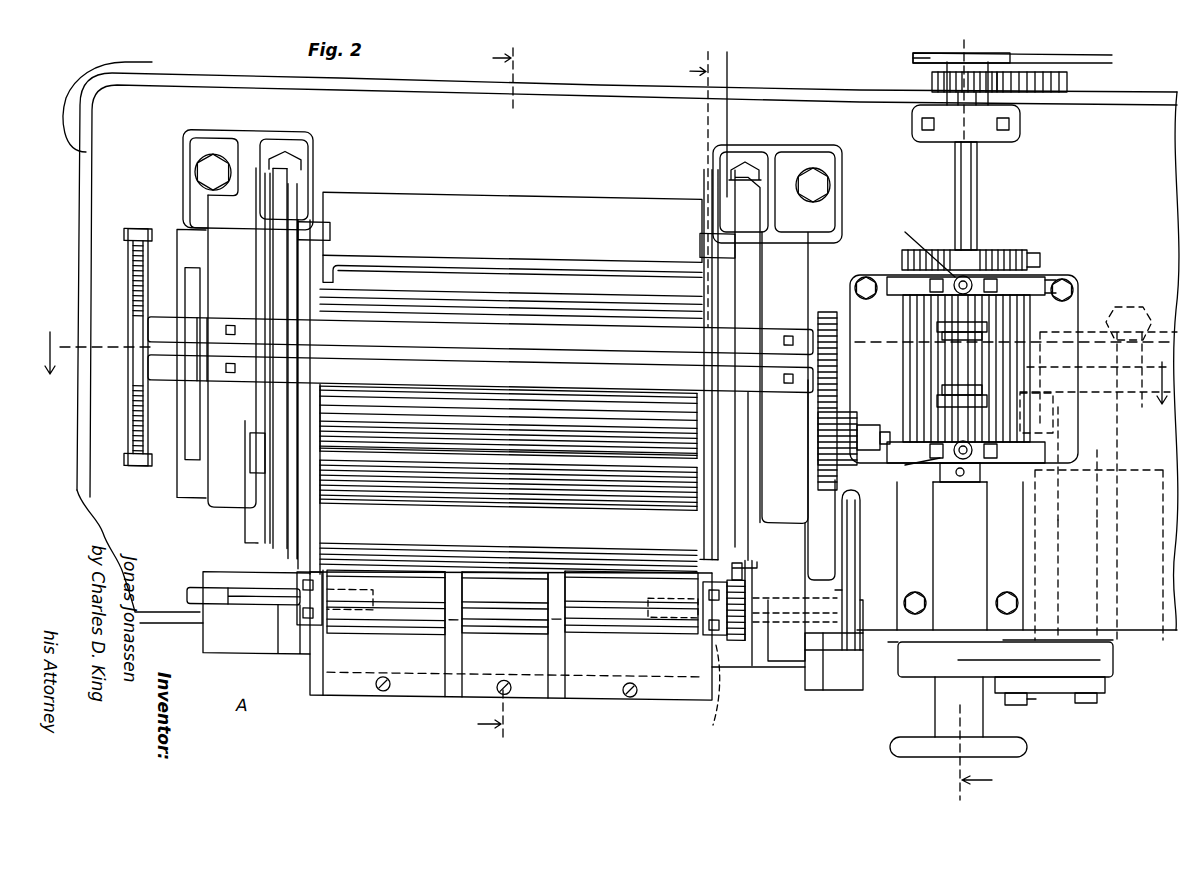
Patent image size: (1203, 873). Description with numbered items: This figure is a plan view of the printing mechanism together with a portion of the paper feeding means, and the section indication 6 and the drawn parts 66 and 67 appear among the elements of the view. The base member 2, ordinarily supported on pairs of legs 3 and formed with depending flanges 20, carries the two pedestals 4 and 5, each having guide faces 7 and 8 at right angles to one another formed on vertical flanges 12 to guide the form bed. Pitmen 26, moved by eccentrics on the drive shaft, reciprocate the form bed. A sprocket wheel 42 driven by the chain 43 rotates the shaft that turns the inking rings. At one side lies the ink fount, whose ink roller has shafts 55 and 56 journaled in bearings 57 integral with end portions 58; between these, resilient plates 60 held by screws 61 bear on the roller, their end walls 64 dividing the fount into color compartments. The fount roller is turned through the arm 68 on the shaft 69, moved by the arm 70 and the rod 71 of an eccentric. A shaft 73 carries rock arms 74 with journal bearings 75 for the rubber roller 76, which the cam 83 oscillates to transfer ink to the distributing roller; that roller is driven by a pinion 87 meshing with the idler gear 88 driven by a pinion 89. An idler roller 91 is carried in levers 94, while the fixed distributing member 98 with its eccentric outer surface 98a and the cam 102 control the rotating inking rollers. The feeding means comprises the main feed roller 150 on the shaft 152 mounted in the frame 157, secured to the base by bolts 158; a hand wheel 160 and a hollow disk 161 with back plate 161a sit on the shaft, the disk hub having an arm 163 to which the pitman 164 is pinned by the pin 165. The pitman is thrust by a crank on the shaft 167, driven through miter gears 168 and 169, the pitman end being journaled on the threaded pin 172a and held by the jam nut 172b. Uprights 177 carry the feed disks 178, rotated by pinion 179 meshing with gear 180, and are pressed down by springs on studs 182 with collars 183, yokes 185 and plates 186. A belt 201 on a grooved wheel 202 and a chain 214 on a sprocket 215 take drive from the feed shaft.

The base member 2 is at (628, 370).
The legs 3 is at (609, 368).
The pedestal 4 is at (242, 140).
The pedestal 5 is at (779, 158).
The section line 6 is at (972, 422).
The guide face 7 is at (700, 178).
The guide face 8 is at (733, 114).
The vertical flange 12 is at (480, 336).
The depending flange 20 is at (141, 75).
The pitman 26 is at (180, 283).
The sprocket wheel 42 is at (150, 322).
The chain 43 is at (130, 264).
The shaft 55 is at (714, 695).
The shaft 56 is at (250, 612).
The bearing 57 is at (298, 634).
The end portion 58 is at (336, 696).
The resilient plate 60 is at (358, 697).
The screw 61 is at (383, 691).
The end wall 64 is at (400, 644).
The post 66 is at (752, 662).
The arm 67 is at (758, 552).
The arm 68 is at (742, 632).
The shaft 69 is at (798, 664).
The arm 70 is at (833, 692).
The rod 71 is at (856, 618).
The shaft 73 is at (578, 514).
The rock arm 74 is at (310, 512).
The journal bearing 75 is at (330, 484).
The rubber roller 76 is at (488, 465).
The cam 83 is at (265, 484).
The pinion 87 is at (860, 506).
The idler gear 88 is at (848, 420).
The pinion 89 is at (838, 316).
The idler roller 91 is at (573, 445).
The lever 94 is at (298, 450).
The fixed distributing member 98 is at (413, 192).
The eccentric outer surface 98a is at (570, 195).
The cam 102 is at (300, 342).
The main feed roller 150 is at (966, 368).
The shaft 152 is at (978, 166).
The frame 157 is at (1090, 285).
The bolt 158 is at (1072, 290).
The hand wheel 160 is at (1013, 758).
The hollow disk 161 is at (930, 686).
The back plate 161a is at (910, 670).
The arm 163 is at (1040, 685).
The pitman 164 is at (1105, 695).
The pin 165 is at (1088, 704).
The shaft 167 is at (1105, 554).
The miter gear 168 is at (1098, 486).
The miter gear 169 is at (1116, 320).
The screw-threaded pin 172a is at (1030, 706).
The jam nut 172b is at (1014, 706).
The upright 177 is at (862, 287).
The feed disk 178 is at (987, 398).
The pinion 179 is at (972, 260).
The gear 180 is at (1018, 252).
The stud 182 is at (950, 277).
The collar 183 is at (958, 279).
The yoke 185 is at (1000, 290).
The plate 186 is at (910, 352).
The belt 201 is at (1012, 54).
The grooved wheel 202 is at (913, 59).
The chain 214 is at (1068, 84).
The sprocket 215 is at (932, 84).